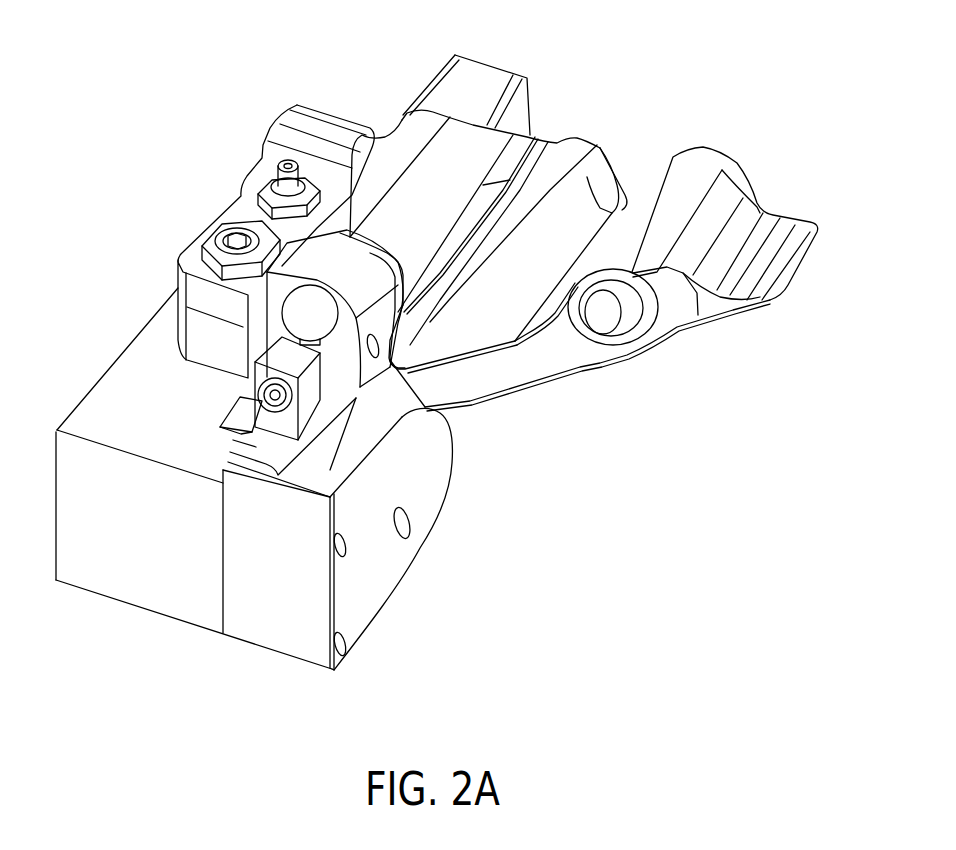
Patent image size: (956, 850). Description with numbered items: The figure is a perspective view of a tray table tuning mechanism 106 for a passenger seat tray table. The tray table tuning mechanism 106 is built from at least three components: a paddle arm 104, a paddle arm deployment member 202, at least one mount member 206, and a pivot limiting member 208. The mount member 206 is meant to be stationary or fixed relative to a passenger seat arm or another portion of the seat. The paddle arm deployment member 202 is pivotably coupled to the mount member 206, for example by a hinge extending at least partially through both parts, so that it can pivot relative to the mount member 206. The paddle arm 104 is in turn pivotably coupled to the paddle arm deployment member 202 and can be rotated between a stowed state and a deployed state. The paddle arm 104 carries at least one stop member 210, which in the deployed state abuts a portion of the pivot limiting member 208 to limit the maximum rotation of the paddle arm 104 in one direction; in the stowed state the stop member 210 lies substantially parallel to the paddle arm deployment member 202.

The paddle arm 104 is at (587, 177).
The tray table tuning mechanism 106 is at (457, 567).
The paddle arm deployment member 202 is at (370, 291).
The mount member 206 is at (140, 583).
The pivot limiting member 208 is at (295, 104).
The stop member 210 is at (378, 126).